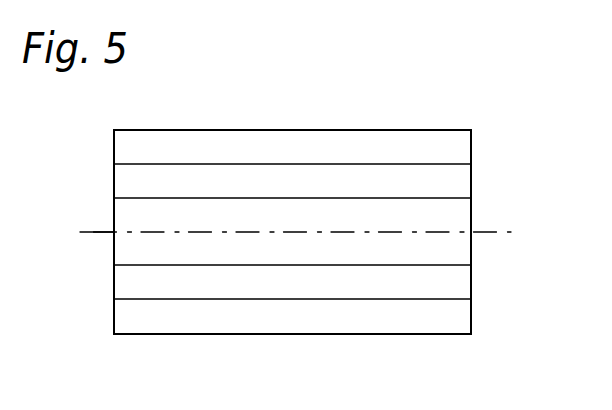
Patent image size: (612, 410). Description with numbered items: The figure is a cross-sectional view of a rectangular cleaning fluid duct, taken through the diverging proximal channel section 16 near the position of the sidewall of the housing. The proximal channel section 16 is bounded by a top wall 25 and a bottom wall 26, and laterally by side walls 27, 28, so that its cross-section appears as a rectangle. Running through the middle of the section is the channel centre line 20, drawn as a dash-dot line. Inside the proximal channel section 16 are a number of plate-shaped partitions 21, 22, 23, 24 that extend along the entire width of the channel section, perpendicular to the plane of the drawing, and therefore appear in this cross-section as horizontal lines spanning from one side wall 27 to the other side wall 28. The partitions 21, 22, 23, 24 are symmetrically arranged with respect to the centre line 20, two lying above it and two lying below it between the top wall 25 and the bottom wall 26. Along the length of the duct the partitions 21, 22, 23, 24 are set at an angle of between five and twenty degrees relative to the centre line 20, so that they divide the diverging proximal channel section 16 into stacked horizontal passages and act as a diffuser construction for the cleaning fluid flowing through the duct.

The proximal channel section 16 is at (202, 120).
The centre line 20 is at (445, 232).
The partition 21 is at (259, 164).
The partition 22 is at (314, 198).
The partition 23 is at (149, 265).
The partition 24 is at (215, 299).
The top wall 25 is at (370, 130).
The bottom wall 26 is at (412, 334).
The side wall 27 is at (114, 183).
The side wall 28 is at (471, 251).